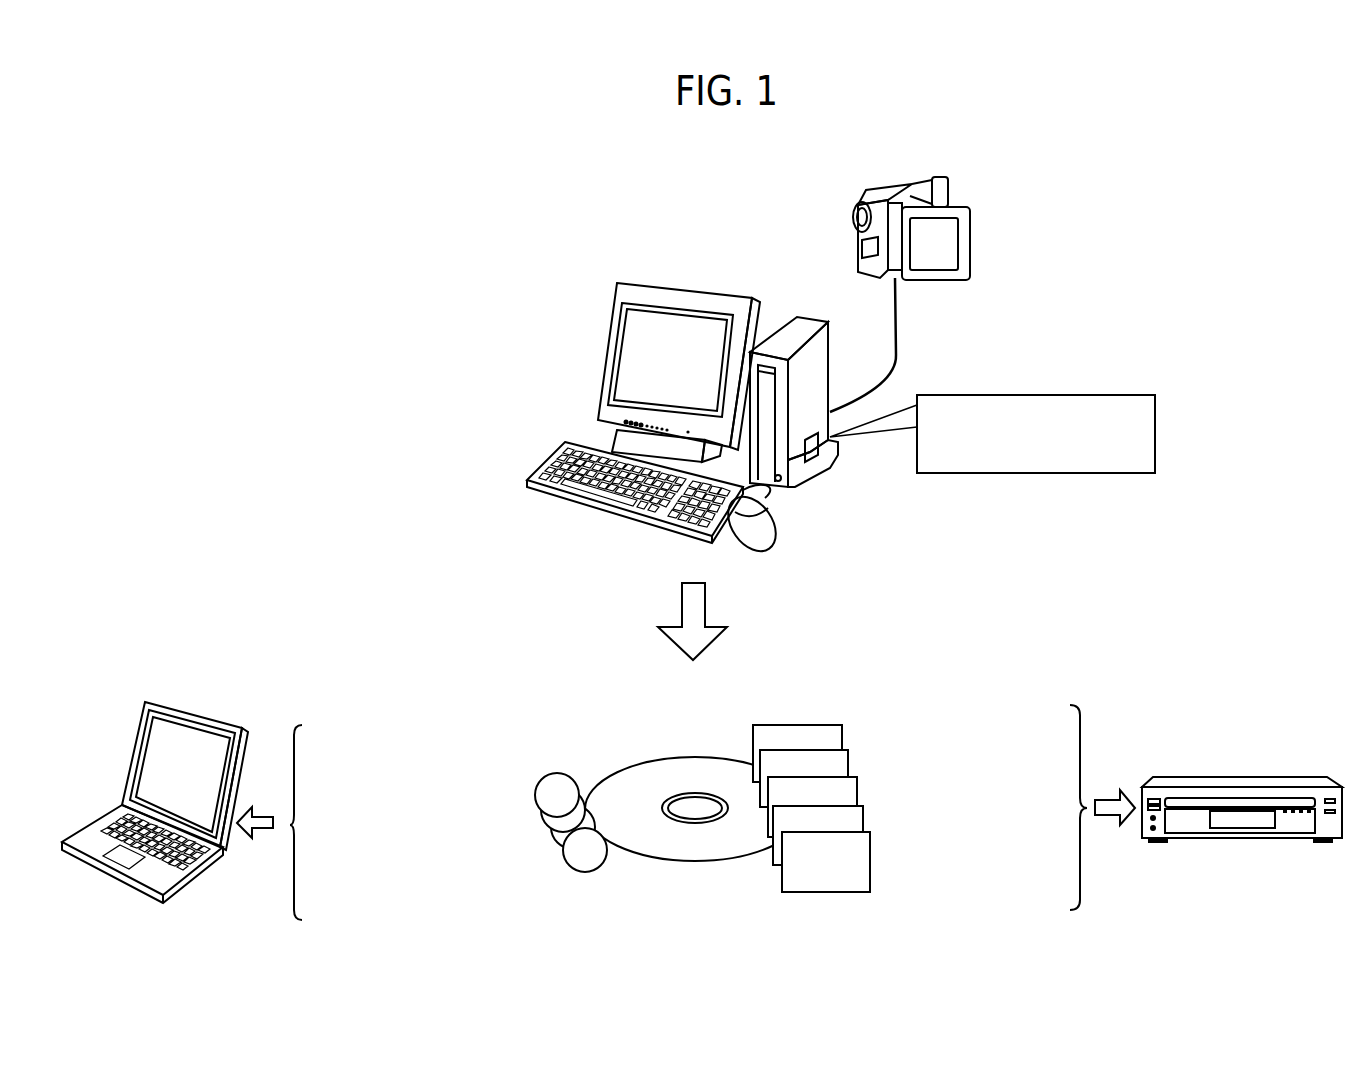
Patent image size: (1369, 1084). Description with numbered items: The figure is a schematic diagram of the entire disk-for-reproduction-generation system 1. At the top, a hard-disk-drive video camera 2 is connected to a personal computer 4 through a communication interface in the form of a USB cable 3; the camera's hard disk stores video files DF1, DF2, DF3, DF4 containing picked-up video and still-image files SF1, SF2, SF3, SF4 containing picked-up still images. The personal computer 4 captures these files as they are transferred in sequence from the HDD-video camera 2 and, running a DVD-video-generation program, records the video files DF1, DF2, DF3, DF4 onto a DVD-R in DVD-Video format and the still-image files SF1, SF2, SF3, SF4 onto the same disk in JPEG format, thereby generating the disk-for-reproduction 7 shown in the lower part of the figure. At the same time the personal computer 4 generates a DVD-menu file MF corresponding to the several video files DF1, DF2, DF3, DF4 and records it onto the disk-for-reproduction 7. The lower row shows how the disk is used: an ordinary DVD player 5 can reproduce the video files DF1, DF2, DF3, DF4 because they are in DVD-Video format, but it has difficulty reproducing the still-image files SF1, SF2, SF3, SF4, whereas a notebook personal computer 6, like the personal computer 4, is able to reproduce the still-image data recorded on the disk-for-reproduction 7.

The disk-for-reproduction-generation system 1 is at (757, 201).
The HDD-video camera 2 is at (905, 272).
The USB cable 3 is at (897, 355).
The personal computer 4 is at (790, 488).
The DVD player 5 is at (1208, 777).
The notebook personal computer 6 is at (75, 863).
The disk-for-reproduction 7 is at (657, 862).
The still-image file SF1 is at (568, 870).
The still-image file SF2 is at (563, 842).
The still-image file SF3 is at (543, 815).
The still-image file SF4 is at (537, 785).
The video file DF1 is at (863, 815).
The video file DF2 is at (858, 790).
The video file DF3 is at (848, 760).
The video file DF4 is at (842, 733).
The DVD-menu file MF is at (872, 875).